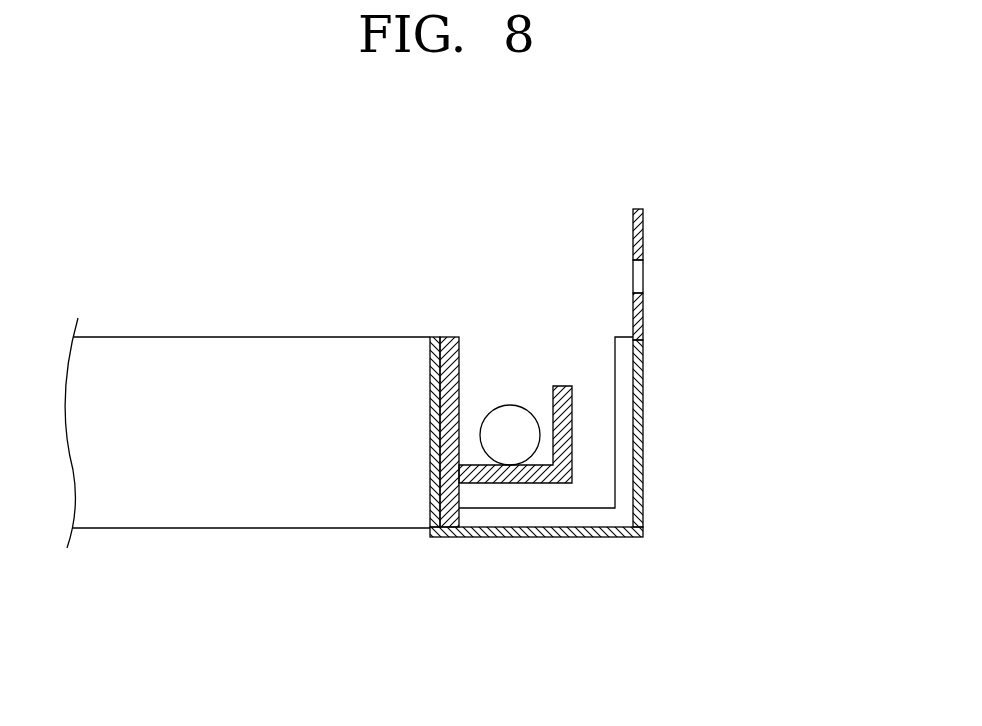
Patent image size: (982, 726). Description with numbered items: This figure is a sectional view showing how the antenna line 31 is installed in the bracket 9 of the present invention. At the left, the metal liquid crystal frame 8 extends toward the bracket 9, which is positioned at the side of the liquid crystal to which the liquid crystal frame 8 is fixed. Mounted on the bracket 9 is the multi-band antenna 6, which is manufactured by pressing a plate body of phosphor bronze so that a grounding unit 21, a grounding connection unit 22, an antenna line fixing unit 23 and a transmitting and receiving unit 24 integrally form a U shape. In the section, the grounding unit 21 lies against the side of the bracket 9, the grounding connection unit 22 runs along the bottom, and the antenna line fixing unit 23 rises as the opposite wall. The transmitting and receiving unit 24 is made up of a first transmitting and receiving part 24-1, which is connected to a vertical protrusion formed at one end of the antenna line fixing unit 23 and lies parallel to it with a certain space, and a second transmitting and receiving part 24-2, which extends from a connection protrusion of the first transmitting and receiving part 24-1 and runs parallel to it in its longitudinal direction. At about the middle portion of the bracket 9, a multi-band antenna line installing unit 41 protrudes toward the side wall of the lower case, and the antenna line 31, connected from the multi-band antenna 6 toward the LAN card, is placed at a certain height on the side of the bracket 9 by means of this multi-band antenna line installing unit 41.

The multi-band antenna 6 is at (658, 210).
The liquid crystal frame 8 is at (305, 358).
The bracket 9 is at (450, 345).
The grounding unit 21 is at (432, 356).
The grounding connection unit 22 is at (556, 537).
The antenna line fixing unit 23 is at (643, 445).
The transmitting and receiving unit 24 is at (734, 274).
The first transmitting and receiving part 24-1 is at (643, 240).
The second transmitting and receiving part 24-2 is at (643, 318).
The antenna line 31 is at (505, 417).
The multi-band antenna line installing unit 41 is at (560, 395).